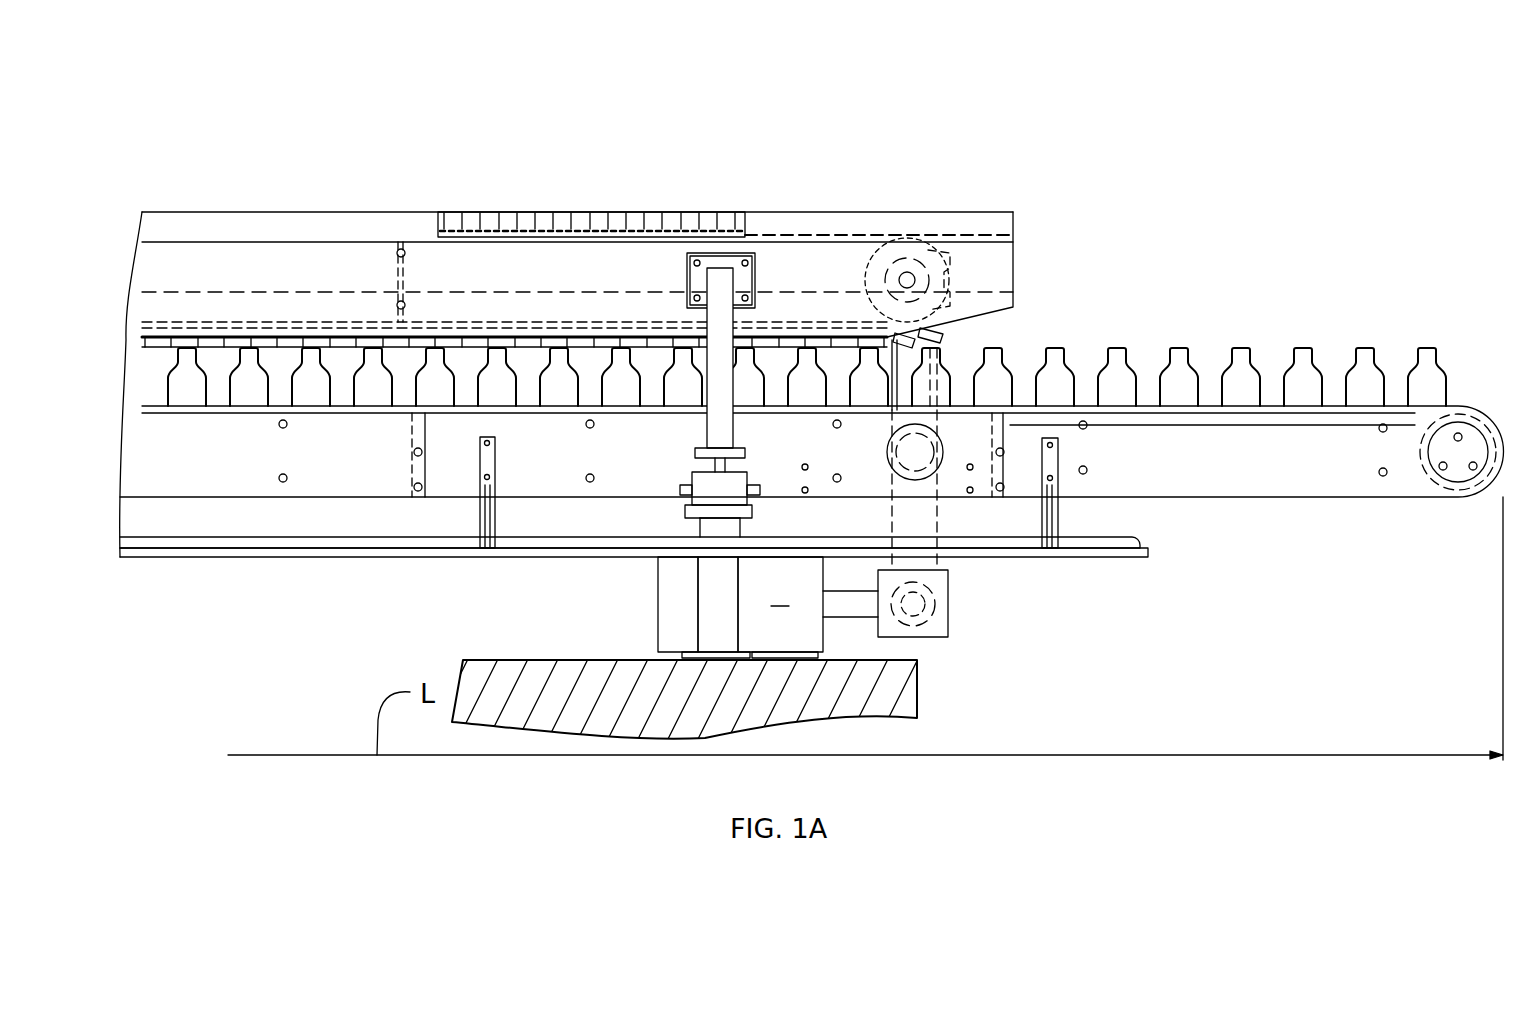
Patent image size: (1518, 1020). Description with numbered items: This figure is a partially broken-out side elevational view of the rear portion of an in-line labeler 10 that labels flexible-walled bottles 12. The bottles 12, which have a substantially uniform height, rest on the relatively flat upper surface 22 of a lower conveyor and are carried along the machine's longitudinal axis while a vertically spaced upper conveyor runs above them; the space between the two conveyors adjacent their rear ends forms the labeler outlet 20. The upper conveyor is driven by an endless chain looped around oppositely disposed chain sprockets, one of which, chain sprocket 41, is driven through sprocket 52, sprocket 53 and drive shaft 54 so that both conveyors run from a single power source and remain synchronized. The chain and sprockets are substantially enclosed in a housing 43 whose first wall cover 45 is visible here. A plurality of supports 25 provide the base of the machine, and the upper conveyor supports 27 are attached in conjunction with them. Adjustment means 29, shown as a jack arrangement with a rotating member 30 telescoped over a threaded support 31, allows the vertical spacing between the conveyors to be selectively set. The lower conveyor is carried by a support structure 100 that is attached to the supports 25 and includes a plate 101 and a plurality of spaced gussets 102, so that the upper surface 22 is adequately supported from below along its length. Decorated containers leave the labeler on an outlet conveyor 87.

The in-line labeler 10 is at (517, 130).
The bottles 12 is at (1365, 350).
The outlet 20 is at (1035, 317).
The upper surface 22 is at (1152, 406).
The supports 25 is at (713, 607).
The upper conveyor supports 27 is at (716, 436).
The adjustment means 29 is at (800, 513).
The rotating member 30 is at (712, 490).
The threaded support 31 is at (690, 515).
The chain sprocket 41 is at (935, 252).
The housing 43 is at (400, 190).
The first wall cover 45 is at (160, 262).
The sprocket 52 is at (868, 272).
The sprocket 53 is at (885, 452).
The drive shaft 54 is at (855, 607).
The outlet conveyor 87 is at (1335, 518).
The support structure 100 is at (333, 575).
The plate 101 is at (993, 558).
The gussets 102 is at (538, 538).